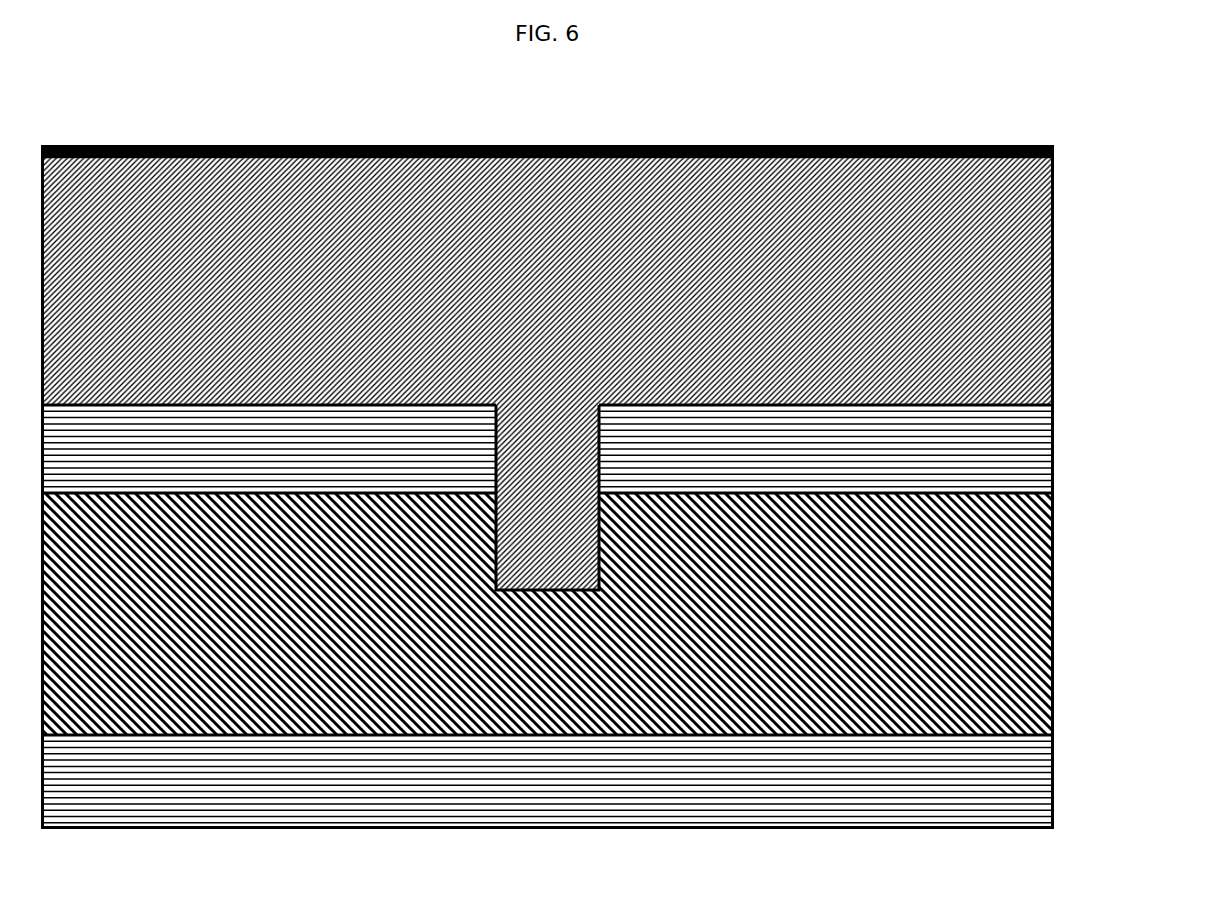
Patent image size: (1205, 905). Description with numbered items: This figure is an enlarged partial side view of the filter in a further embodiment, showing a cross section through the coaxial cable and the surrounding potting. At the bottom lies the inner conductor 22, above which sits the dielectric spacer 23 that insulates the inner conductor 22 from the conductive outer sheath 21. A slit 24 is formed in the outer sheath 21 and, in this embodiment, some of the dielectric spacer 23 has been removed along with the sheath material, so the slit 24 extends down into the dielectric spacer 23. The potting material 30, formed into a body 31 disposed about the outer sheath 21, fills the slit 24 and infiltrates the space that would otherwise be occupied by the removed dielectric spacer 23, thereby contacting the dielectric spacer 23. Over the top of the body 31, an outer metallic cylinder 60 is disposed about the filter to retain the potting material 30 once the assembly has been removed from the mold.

The outer metallic cylinder 60 is at (1012, 145).
The body 31 is at (1003, 159).
The potting material 30 is at (992, 235).
The slit 24 is at (522, 418).
The outer sheath 21 is at (1015, 423).
The dielectric spacer 23 is at (990, 607).
The inner conductor 22 is at (1015, 796).